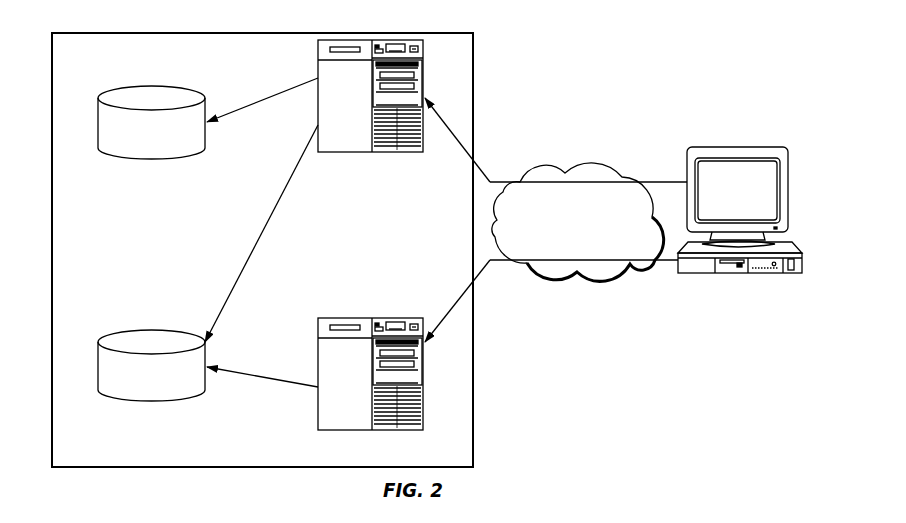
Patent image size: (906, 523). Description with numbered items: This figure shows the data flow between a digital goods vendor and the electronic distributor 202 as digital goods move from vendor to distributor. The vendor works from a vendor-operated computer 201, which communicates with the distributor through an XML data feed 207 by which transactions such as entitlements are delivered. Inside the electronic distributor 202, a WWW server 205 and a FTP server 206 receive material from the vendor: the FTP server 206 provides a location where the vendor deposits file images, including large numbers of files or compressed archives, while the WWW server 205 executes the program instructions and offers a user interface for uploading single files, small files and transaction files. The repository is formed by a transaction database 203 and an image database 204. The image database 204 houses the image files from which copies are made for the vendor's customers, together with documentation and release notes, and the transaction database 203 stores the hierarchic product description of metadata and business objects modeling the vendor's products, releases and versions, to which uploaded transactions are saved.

The vendor-operated computer 201 is at (752, 147).
The electronic distributor 202 is at (98, 32).
The transaction database 203 is at (120, 87).
The image database 204 is at (120, 332).
The WWW server 205 is at (318, 60).
The FTP server 206 is at (318, 338).
The XML data feed 207 is at (605, 165).